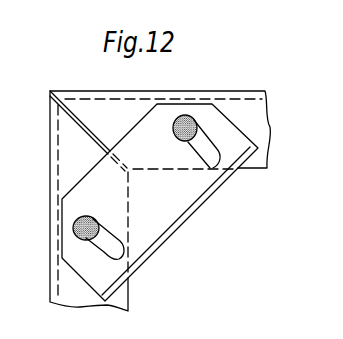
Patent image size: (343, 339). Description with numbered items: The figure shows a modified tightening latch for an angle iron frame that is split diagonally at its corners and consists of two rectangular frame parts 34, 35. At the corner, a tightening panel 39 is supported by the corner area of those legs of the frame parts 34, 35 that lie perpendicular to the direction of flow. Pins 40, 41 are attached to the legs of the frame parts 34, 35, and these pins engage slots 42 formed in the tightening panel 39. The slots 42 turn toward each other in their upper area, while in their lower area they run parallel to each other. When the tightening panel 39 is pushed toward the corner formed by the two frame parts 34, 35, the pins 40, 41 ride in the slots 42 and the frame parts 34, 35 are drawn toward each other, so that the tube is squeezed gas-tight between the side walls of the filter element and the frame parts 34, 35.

The frame part 34 is at (257, 128).
The frame part 35 is at (82, 293).
The tightening panel 39 is at (170, 203).
The pin 40 is at (196, 122).
The pin 41 is at (77, 237).
The slot 42 is at (204, 159).